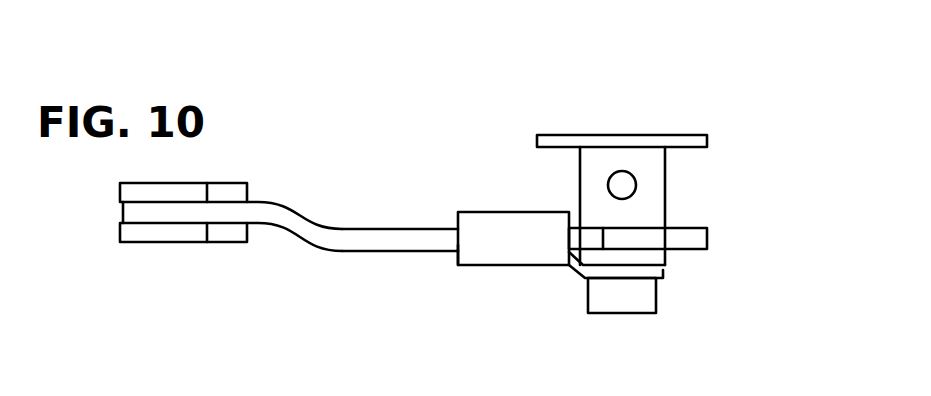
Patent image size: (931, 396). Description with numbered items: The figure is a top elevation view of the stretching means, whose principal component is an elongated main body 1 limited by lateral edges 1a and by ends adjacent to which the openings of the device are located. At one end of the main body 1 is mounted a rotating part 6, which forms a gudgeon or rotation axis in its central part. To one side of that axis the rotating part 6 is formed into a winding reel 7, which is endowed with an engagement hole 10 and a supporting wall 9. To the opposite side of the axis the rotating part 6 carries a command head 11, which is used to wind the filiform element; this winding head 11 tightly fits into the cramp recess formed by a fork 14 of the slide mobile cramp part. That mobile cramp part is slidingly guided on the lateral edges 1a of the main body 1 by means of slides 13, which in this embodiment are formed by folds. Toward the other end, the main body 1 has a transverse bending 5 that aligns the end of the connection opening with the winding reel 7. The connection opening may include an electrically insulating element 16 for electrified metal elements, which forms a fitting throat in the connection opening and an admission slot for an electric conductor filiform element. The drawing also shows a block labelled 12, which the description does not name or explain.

The main body 1 is at (400, 228).
The lateral edges 1a is at (386, 238).
The transverse bending 5 is at (269, 262).
The rotating part 6 is at (632, 197).
The winding reel 7 is at (701, 183).
The supporting wall 9 is at (574, 135).
The engagement hole 10 is at (622, 186).
The command head 11 is at (643, 295).
The block 12 is at (506, 290).
The slides 13 is at (458, 257).
The fork 14 is at (663, 270).
The electrically insulating element 16 is at (165, 269).